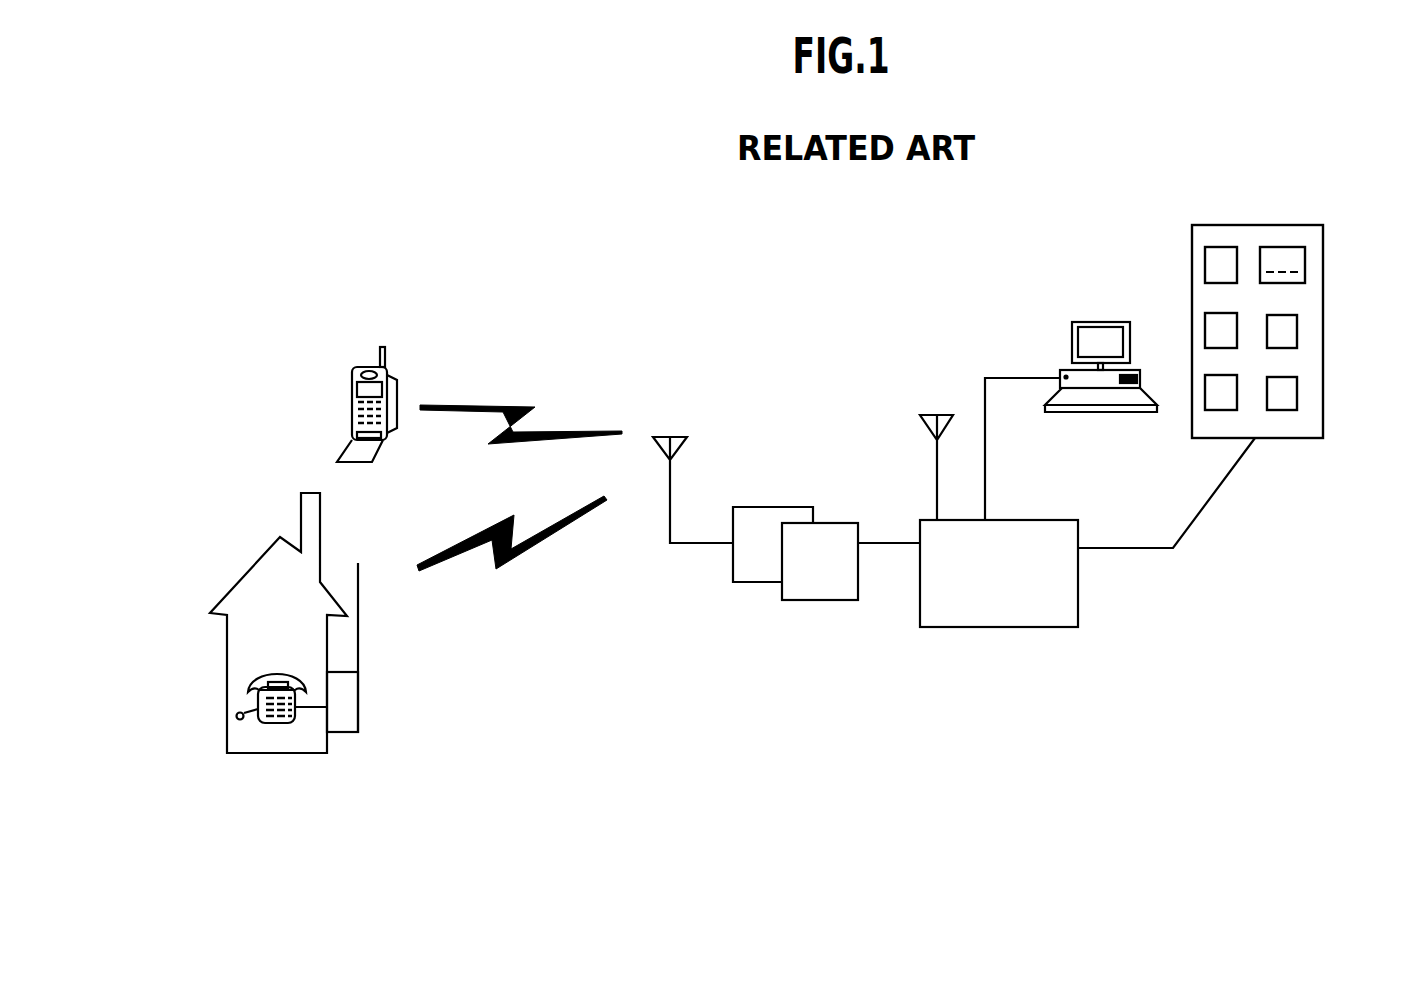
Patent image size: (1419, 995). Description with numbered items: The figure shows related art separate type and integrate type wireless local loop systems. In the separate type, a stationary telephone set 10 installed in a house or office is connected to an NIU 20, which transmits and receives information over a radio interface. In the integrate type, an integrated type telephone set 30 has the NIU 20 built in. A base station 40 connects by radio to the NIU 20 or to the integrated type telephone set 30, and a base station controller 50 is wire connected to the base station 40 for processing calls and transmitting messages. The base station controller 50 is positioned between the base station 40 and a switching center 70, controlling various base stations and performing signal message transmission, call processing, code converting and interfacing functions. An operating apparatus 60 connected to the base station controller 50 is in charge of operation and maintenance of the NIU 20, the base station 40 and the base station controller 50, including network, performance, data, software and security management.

The stationary telephone set 10 is at (278, 724).
The NIU 20 is at (342, 723).
The integrated type telephone set 30 is at (393, 372).
The base station 40 is at (838, 600).
The base station controller 50 is at (955, 627).
The operating apparatus 60 is at (1071, 345).
The switching center 70 is at (1285, 438).